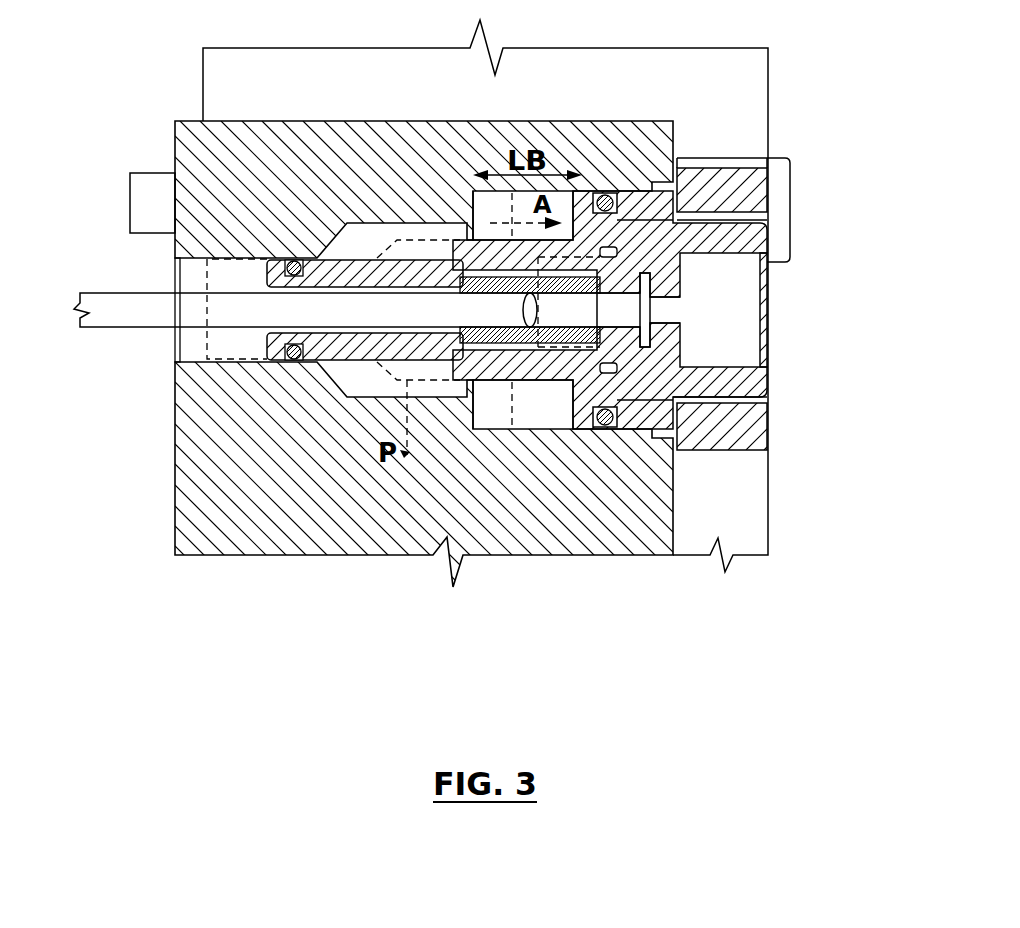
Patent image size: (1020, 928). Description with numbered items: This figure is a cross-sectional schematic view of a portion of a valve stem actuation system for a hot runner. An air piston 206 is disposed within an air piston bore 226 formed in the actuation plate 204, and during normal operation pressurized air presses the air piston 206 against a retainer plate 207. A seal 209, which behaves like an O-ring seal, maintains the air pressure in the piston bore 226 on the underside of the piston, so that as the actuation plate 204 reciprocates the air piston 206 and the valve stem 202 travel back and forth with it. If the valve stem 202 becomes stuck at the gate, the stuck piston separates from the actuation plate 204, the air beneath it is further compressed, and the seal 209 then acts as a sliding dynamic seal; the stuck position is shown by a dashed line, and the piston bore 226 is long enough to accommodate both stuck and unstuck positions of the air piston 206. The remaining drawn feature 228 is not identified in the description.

The valve stem 202 is at (748, 118).
The actuation plate 204 is at (325, 520).
The air piston 206 is at (645, 212).
The retainer plate 207 is at (752, 188).
The seal 209 is at (610, 405).
The air piston bore 226 is at (497, 405).
The orifice / passage 228 is at (525, 310).